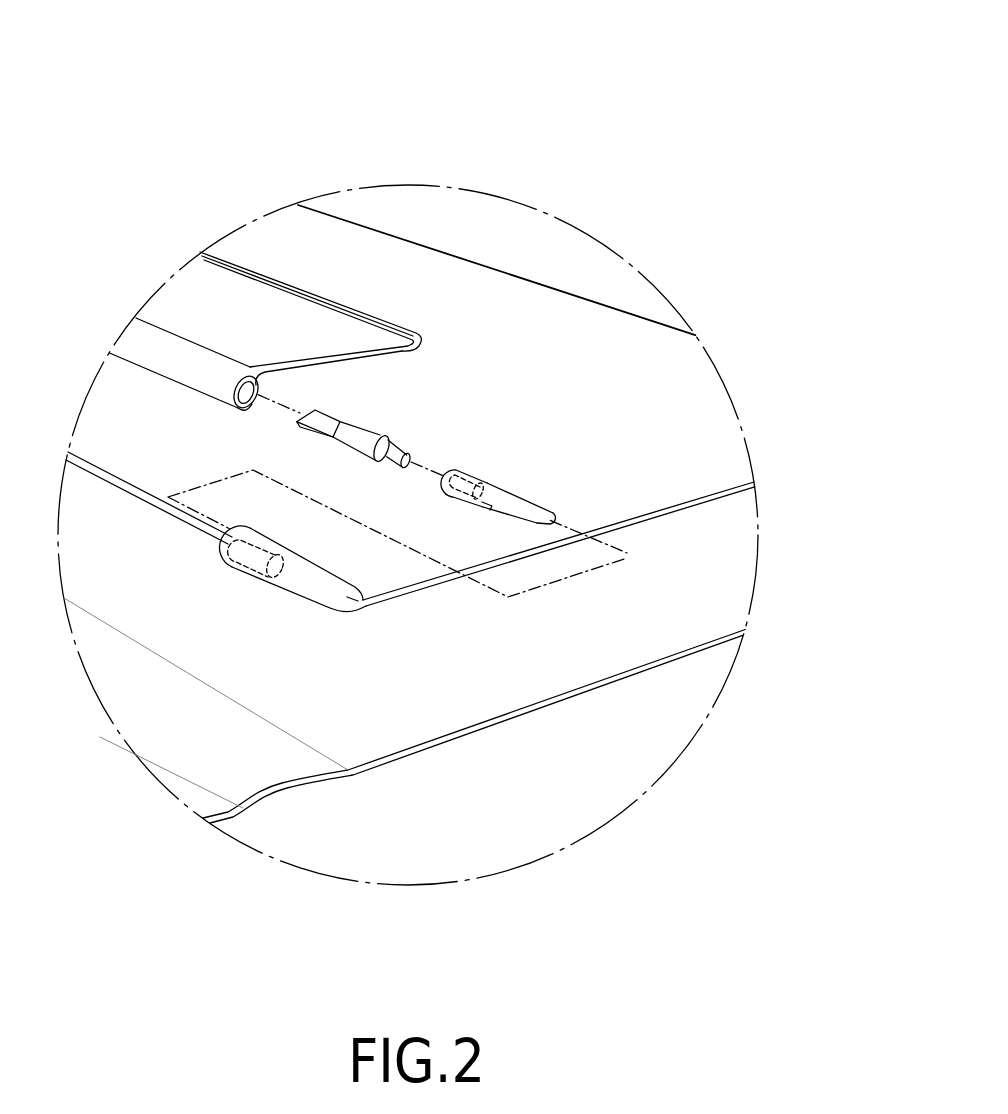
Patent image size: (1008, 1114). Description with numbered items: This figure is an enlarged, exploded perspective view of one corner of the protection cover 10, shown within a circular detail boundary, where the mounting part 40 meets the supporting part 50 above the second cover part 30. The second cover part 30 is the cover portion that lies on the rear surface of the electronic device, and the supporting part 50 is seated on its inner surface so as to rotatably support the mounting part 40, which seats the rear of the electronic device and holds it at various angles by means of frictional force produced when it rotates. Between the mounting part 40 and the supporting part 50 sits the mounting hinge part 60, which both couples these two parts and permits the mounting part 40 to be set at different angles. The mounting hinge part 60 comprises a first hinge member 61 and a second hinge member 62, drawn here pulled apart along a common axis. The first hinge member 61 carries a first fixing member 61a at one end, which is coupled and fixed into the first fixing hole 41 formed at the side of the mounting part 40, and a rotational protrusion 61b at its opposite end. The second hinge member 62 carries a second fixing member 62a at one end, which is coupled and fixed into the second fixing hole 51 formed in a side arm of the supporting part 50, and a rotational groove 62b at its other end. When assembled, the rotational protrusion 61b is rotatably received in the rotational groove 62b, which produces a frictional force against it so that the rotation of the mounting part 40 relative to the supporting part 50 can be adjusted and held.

The protection cover 10 is at (105, 70).
The second cover part 30 is at (452, 637).
The mounting part 40 is at (218, 311).
The first fixing hole 41 is at (247, 392).
The supporting part 50 is at (278, 243).
The second fixing hole 51 is at (240, 550).
The mounting hinge part 60 is at (599, 328).
The first hinge member 61 is at (530, 301).
The first fixing member 61a is at (325, 418).
The rotational protrusion 61b is at (403, 457).
The second hinge member 62 is at (644, 415).
The second fixing member 62a is at (468, 480).
The rotational groove 62b is at (520, 500).